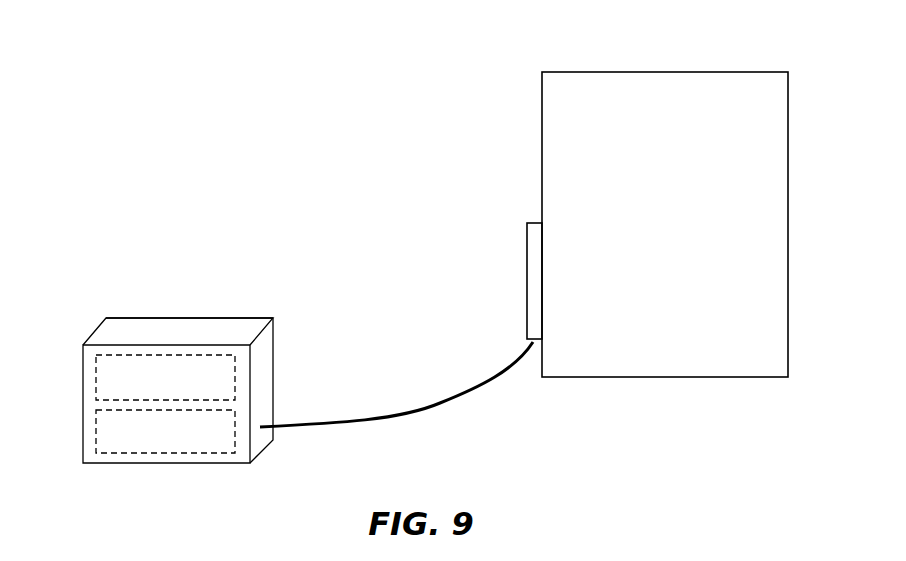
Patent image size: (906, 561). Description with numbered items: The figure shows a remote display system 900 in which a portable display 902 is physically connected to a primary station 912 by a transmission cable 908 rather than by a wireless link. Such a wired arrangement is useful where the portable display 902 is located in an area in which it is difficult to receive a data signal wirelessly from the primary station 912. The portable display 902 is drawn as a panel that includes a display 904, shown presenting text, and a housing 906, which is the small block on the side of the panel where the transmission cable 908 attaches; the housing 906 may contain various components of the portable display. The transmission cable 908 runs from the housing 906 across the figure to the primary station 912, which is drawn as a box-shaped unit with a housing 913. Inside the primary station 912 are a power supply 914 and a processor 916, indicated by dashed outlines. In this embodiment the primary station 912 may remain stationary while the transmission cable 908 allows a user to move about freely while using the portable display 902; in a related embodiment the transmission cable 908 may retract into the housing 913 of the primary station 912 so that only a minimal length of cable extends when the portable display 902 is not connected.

The remote display system 900 is at (98, 106).
The portable display 902 is at (540, 100).
The display 904 is at (745, 348).
The housing 906 is at (527, 235).
The transmission cable 908 is at (445, 402).
The primary station 912 is at (118, 316).
The housing 913 is at (243, 333).
The power supply 914 is at (104, 438).
The processor 916 is at (104, 383).